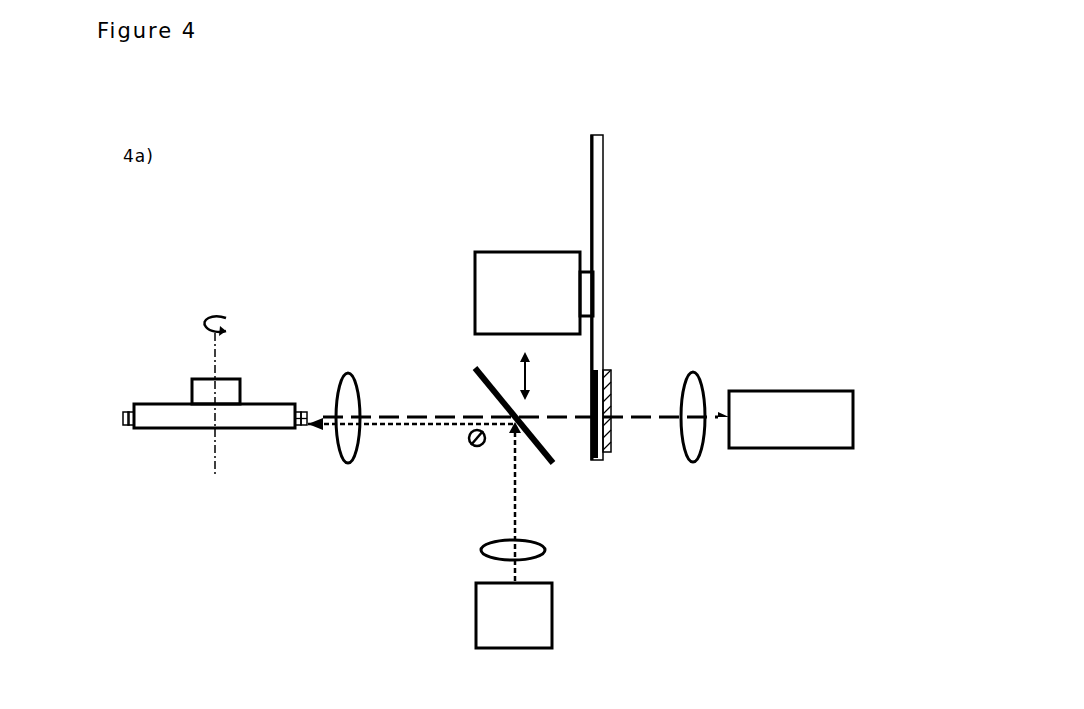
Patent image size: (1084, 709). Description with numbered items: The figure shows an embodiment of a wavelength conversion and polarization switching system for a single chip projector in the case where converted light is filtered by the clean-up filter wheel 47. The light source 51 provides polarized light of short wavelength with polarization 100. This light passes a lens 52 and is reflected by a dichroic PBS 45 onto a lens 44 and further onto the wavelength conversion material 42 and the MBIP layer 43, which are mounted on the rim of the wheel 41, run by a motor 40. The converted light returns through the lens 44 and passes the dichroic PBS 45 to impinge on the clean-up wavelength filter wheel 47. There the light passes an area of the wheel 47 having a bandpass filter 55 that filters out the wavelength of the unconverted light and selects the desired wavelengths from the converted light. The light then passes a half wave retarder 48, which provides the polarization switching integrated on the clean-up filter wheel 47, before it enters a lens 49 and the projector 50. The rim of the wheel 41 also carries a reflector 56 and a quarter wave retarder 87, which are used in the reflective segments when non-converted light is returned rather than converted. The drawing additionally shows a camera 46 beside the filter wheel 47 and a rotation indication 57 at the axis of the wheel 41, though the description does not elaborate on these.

The motor 40 is at (223, 379).
The wheel 41 is at (160, 428).
The wavelength conversion material 42 is at (298, 428).
The MBIP layer 43 is at (300, 411).
The lens 44 is at (343, 378).
The dichroic PBS 45 is at (475, 367).
The camera 46 is at (493, 252).
The clean-up color filter wheel 47 is at (600, 134).
The half wave retarder 48 is at (603, 372).
The lens 49 is at (690, 367).
The projector 50 is at (762, 391).
The light source 51 is at (525, 583).
The lens 52 is at (538, 545).
The bandpass filter 55 is at (592, 442).
The reflector 56 is at (132, 428).
The rotation axis 57 is at (215, 349).
The quarter wave retarder 87 is at (125, 412).
The polarization 100 is at (472, 445).